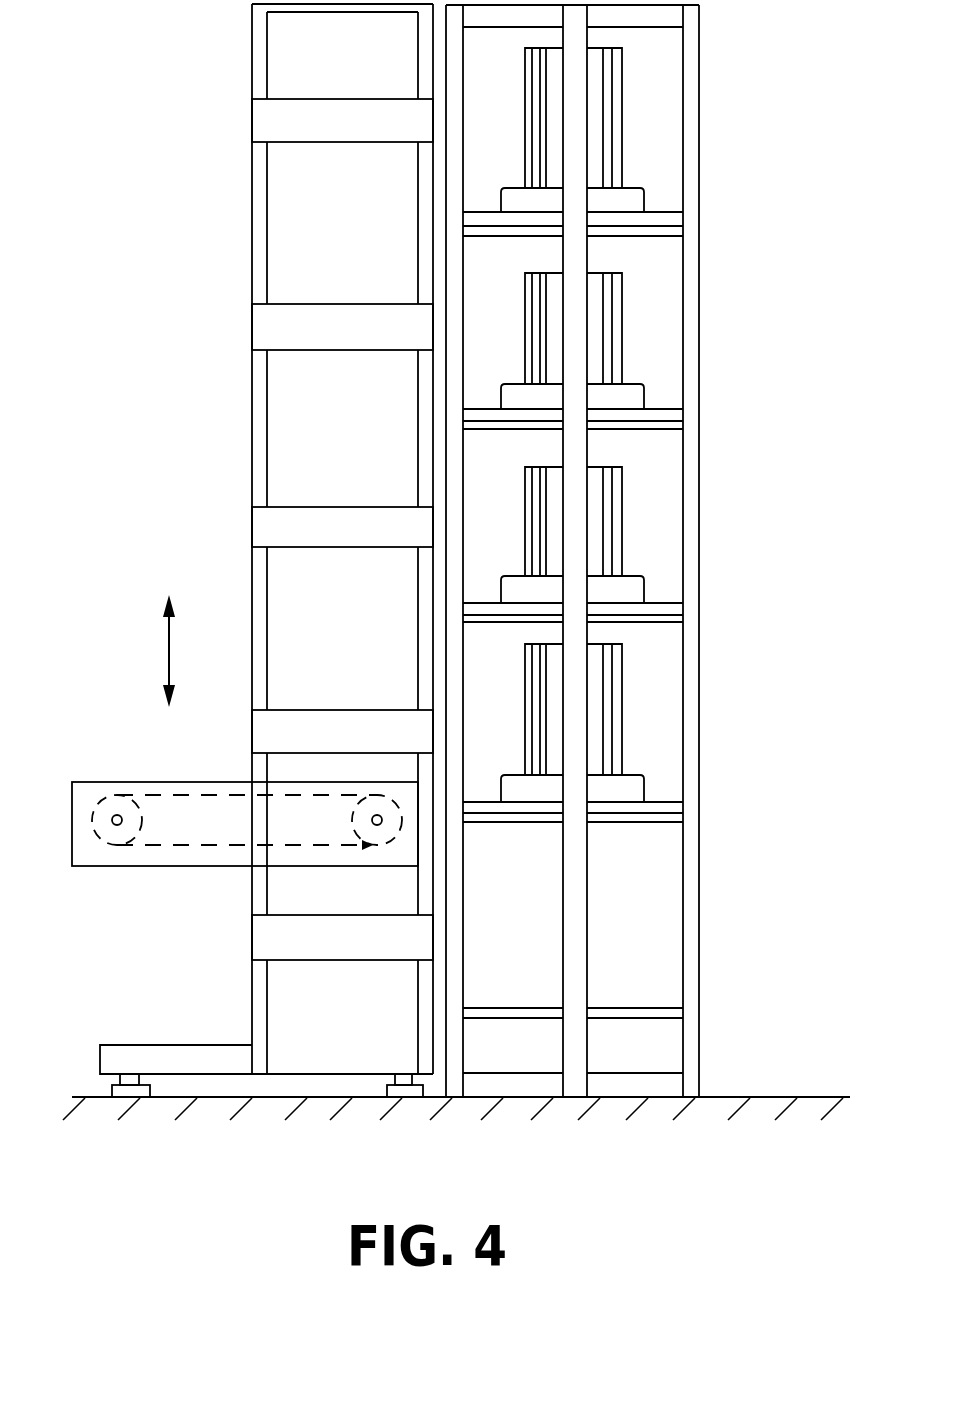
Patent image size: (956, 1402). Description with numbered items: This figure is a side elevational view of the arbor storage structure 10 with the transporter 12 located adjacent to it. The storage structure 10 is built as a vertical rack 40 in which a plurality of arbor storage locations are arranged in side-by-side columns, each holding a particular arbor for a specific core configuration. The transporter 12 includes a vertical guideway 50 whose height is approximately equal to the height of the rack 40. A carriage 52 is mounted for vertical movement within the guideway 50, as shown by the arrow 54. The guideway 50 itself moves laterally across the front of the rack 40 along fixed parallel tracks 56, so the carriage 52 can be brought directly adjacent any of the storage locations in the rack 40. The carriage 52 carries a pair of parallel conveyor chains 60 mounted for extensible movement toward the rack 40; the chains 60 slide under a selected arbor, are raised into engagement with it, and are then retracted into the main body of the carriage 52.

The storage structure 10 is at (732, 280).
The transporter 12 is at (200, 185).
The vertical rack 40 is at (699, 530).
The vertical guideway 50 is at (252, 400).
The carriage 52 is at (72, 817).
The arrow 54 is at (169, 652).
The fixed parallel tracks 56 is at (167, 1098).
The conveyor chains 60 is at (183, 846).